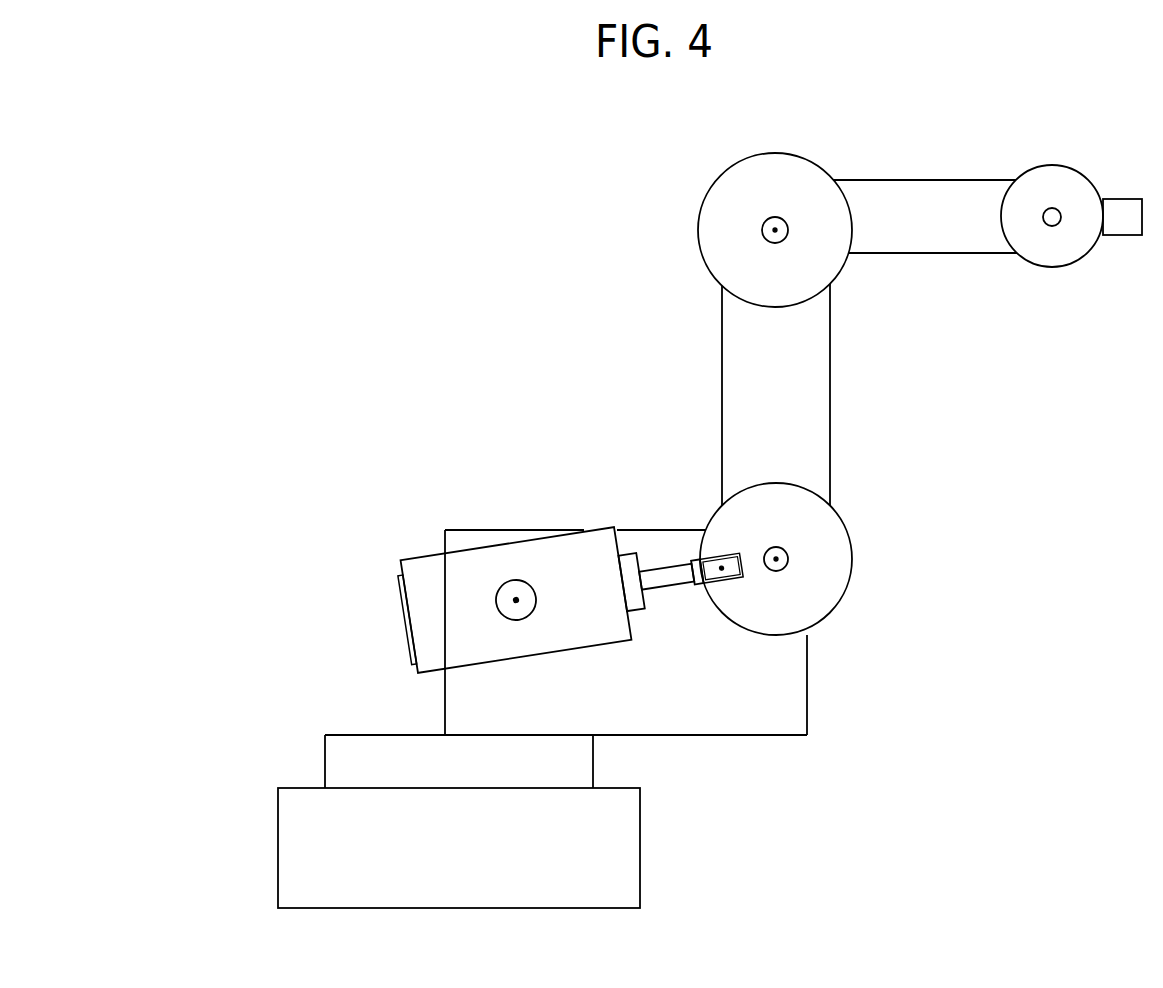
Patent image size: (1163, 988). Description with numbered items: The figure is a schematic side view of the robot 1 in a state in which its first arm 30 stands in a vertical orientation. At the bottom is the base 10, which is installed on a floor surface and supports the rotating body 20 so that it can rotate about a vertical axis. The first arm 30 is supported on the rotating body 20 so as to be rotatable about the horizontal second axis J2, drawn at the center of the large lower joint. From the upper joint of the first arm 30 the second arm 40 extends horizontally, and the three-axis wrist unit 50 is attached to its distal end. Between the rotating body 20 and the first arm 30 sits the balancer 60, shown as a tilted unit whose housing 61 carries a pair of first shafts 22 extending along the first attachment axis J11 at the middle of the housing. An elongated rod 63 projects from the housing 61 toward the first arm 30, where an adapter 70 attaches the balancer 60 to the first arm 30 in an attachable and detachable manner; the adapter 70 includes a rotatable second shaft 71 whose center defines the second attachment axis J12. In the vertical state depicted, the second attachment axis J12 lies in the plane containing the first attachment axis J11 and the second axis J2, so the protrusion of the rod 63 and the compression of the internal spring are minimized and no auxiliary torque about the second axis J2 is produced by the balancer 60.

The robot 1 is at (505, 240).
The base 10 is at (278, 838).
The rotating body 20 is at (730, 748).
The first arm 30 is at (703, 322).
The second arm 40 is at (925, 160).
The three-axis wrist unit 50 is at (1127, 181).
The balancer 60 is at (385, 603).
The housing 61 is at (418, 557).
The first shafts 22 is at (513, 581).
The rod 63 is at (674, 598).
The adapter 70 is at (671, 539).
The second shaft 71 is at (731, 560).
The first attachment axis J11 is at (517, 603).
The second attachment axis J12 is at (722, 562).
The second axis J2 is at (788, 559).